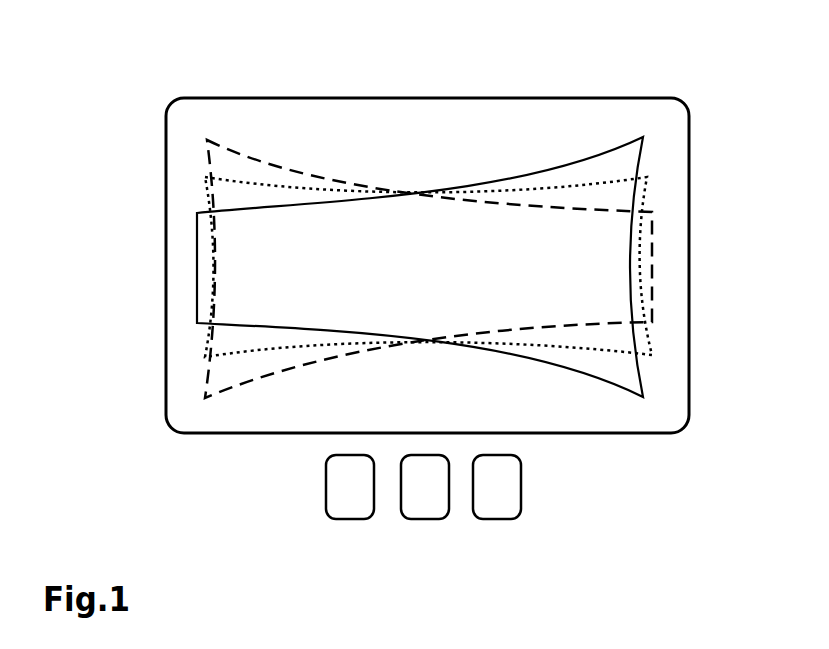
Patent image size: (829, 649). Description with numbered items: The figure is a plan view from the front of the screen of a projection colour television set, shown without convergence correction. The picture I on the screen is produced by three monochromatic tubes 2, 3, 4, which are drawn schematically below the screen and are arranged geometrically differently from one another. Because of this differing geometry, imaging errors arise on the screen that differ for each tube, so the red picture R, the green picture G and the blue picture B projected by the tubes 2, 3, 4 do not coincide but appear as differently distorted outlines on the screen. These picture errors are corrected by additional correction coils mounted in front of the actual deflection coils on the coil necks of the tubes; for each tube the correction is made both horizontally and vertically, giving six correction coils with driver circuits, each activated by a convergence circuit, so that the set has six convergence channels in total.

The image displayed on screen I is at (545, 130).
The red image component (solid outline) R is at (643, 157).
The green image component (dotted outline) G is at (307, 182).
The blue image component (dashed outline) B is at (238, 152).
The monochromatic tube 2 is at (343, 507).
The monochromatic tube 3 is at (421, 507).
The monochromatic tube 4 is at (494, 507).